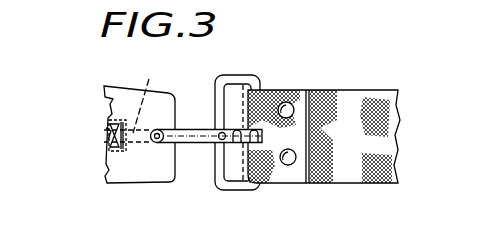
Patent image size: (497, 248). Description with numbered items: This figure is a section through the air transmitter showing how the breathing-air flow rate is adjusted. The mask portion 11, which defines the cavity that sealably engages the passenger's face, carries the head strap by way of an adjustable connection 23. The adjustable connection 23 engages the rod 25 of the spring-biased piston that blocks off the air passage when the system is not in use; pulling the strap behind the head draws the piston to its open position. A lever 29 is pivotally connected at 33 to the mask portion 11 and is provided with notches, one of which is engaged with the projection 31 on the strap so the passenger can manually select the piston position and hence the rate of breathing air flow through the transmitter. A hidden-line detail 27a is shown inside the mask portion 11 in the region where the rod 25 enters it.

The mask portion 11 is at (117, 102).
The adjustable connection 23 is at (355, 103).
The rod 25 is at (151, 76).
The fastener detail 27a is at (104, 146).
The lever 29 is at (189, 128).
The projection 31 is at (221, 140).
The pivot connection 33 is at (155, 142).